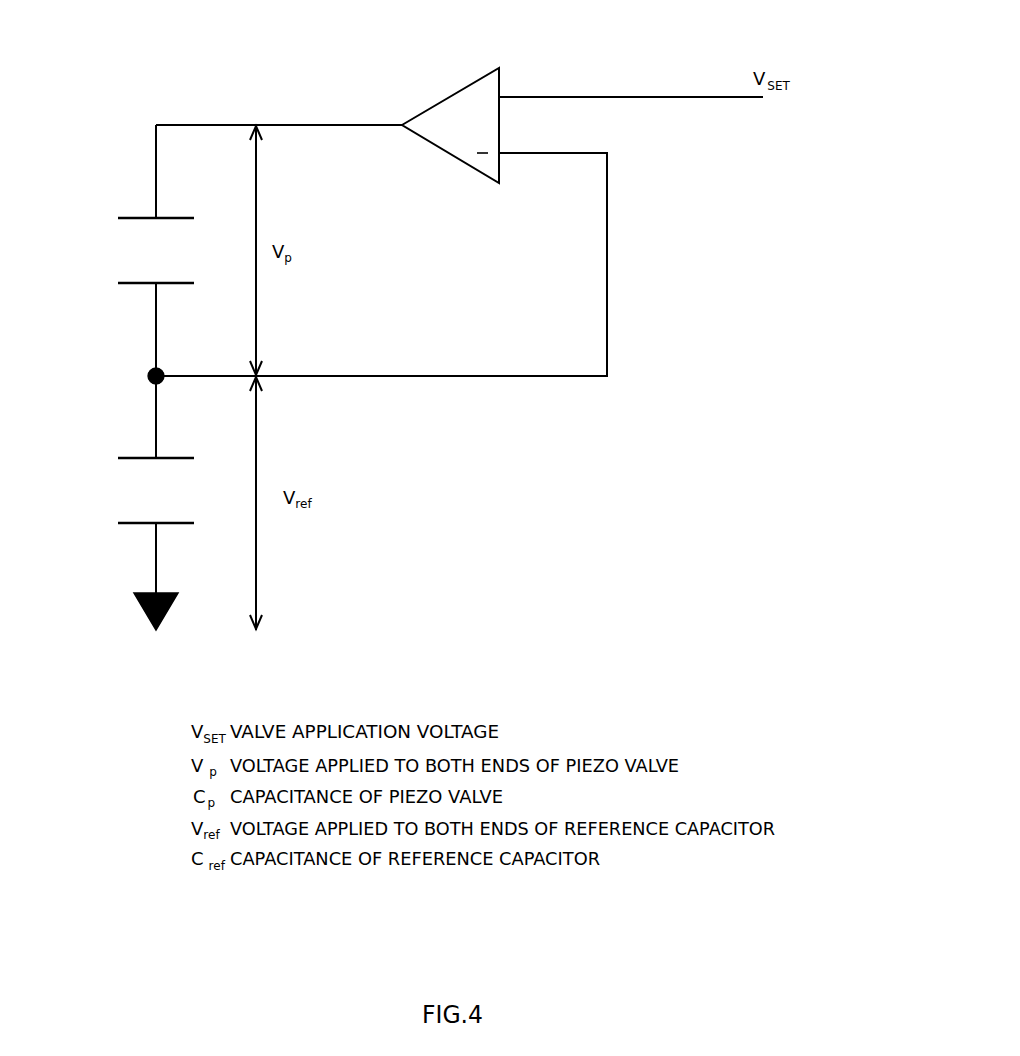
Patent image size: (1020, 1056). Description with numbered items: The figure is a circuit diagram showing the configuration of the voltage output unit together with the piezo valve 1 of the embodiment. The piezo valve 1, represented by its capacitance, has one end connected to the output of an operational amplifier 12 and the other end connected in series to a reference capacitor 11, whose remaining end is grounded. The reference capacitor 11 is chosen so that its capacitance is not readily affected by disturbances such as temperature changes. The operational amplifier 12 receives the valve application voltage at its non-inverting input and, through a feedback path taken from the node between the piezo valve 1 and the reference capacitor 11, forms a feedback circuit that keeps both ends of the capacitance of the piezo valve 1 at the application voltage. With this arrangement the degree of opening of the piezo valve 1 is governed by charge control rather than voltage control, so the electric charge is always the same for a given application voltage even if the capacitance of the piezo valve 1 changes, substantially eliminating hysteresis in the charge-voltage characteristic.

The piezo valve 1 is at (128, 190).
The reference capacitor 11 is at (136, 440).
The operational amplifier 12 is at (420, 74).